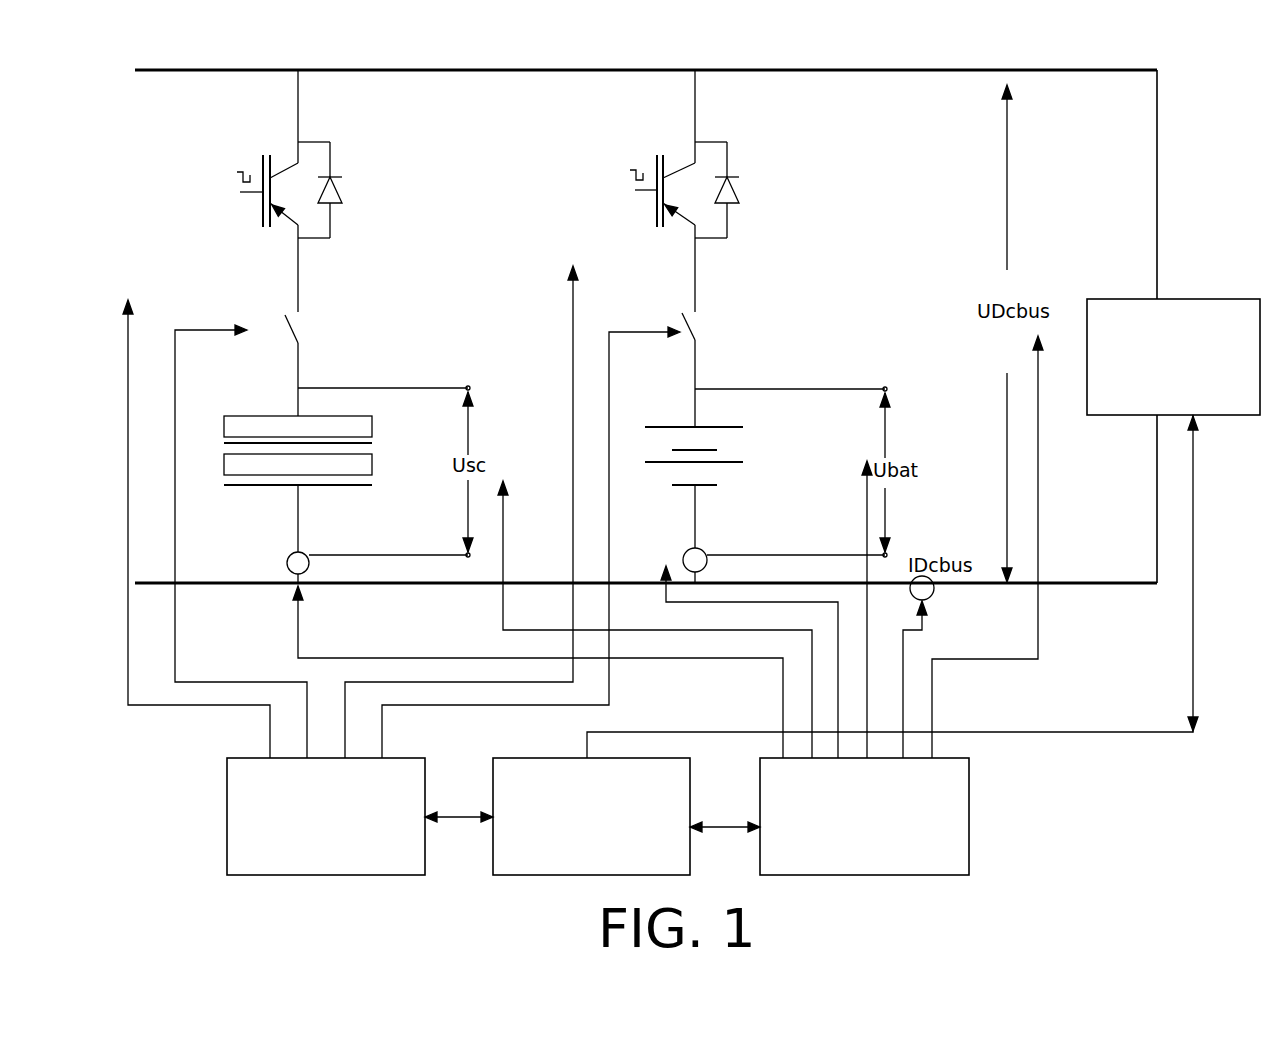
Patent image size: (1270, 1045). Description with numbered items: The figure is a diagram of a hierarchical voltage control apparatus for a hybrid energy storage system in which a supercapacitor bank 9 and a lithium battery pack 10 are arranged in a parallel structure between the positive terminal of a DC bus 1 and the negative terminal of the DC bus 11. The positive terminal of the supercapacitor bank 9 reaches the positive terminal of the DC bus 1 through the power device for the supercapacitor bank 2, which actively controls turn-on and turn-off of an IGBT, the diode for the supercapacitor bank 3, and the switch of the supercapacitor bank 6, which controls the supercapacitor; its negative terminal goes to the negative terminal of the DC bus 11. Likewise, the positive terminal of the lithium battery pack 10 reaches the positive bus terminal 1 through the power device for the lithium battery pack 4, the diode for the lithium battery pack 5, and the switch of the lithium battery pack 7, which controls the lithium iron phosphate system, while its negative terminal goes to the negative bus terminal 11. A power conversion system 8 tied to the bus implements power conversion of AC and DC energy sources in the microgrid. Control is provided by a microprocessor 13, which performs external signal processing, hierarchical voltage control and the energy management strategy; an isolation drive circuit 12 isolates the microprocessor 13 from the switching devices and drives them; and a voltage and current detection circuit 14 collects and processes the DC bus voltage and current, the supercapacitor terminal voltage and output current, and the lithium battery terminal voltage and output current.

The positive terminal DC+ of a DC bus 1 is at (623, 164).
The power device Ssc for a supercapacitor bank 2 is at (191, 191).
The diode Dsc for the supercapacitor bank 3 is at (392, 197).
The power device Sbat for a lithium battery pack 4 is at (520, 414).
The diode Dbat for the lithium battery pack 5 is at (787, 182).
The switch of the supercapacitor bank 6 is at (343, 536).
The switch of the lithium battery pack 7 is at (646, 531).
The power conversion system (PCS) 8 is at (1173, 441).
The supercapacitor bank 9 is at (319, 486).
The lithium battery pack 10 is at (739, 487).
The negative terminal DC− of the DC bus 11 is at (646, 615).
The isolation drive circuit 12 is at (308, 587).
The microprocessor 13 is at (845, 645).
The voltage and current detection circuit 14 is at (864, 816).